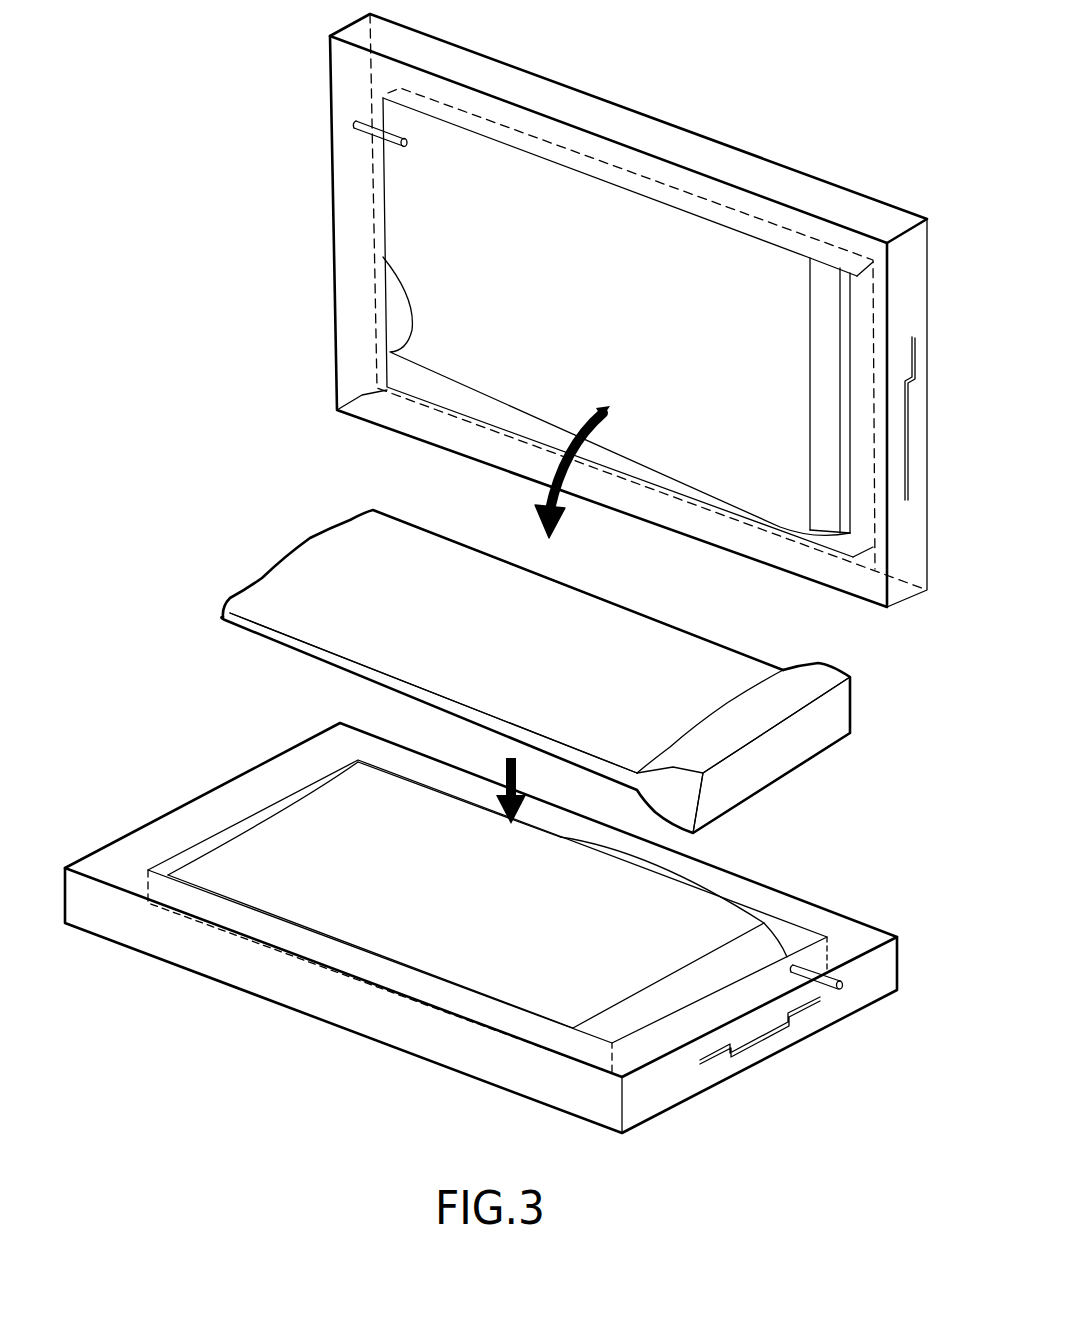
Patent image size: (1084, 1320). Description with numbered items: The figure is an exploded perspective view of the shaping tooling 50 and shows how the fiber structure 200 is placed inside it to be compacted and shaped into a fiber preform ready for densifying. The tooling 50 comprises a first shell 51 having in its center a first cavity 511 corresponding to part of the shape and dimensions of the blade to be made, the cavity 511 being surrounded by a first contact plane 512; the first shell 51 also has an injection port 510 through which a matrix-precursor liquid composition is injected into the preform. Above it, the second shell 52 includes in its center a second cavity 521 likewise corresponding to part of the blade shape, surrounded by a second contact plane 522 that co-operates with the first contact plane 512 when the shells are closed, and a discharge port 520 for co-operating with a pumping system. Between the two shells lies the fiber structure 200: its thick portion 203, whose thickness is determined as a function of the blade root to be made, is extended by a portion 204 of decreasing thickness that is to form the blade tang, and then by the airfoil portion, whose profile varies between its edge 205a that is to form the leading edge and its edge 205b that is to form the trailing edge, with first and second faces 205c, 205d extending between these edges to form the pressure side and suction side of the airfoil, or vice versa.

The shaping tooling 50 is at (150, 413).
The first shell 51 is at (196, 780).
The second shell 52 is at (320, 373).
The injection port 510 is at (828, 982).
The first cavity 511 is at (293, 847).
The first contact plane 512 is at (112, 855).
The discharge port 520 is at (365, 128).
The second cavity 521 is at (420, 258).
The second contact plane 522 is at (348, 66).
The fiber structure 200 is at (270, 552).
The end portion of cushion 203 is at (680, 797).
The portion of decreasing thickness 204 is at (637, 782).
The edge 205a is at (273, 635).
The edge 205b is at (648, 615).
The first face 205c is at (358, 693).
The second face 205d is at (670, 652).